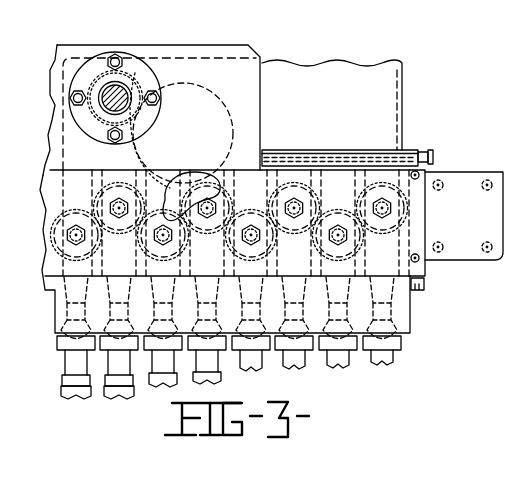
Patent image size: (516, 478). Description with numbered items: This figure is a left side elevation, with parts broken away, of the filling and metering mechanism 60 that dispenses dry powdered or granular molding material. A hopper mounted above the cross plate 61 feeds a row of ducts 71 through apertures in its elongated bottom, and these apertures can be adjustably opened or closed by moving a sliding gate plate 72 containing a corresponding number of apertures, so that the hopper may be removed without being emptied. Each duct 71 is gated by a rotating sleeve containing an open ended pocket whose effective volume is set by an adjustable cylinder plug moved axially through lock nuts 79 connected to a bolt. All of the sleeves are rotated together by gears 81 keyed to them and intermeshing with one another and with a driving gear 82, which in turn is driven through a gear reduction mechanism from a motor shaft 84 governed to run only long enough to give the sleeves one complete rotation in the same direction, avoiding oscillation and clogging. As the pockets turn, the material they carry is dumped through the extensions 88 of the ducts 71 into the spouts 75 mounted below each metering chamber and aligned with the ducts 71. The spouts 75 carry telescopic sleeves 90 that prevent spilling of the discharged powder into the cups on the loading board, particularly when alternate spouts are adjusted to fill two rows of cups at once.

The filling and metering mechanism 60 is at (414, 307).
The cross plate 61 is at (460, 187).
The ducts 71 is at (384, 178).
The sliding gate plate 72 is at (431, 150).
The spouts 75 is at (299, 358).
The lock nuts 79 is at (292, 203).
The gears 81 is at (183, 259).
The driving gear 82 is at (189, 177).
The motor shaft 84 is at (128, 76).
The extensions of the ducts 88 is at (294, 291).
The telescopic sleeves 90 is at (124, 395).